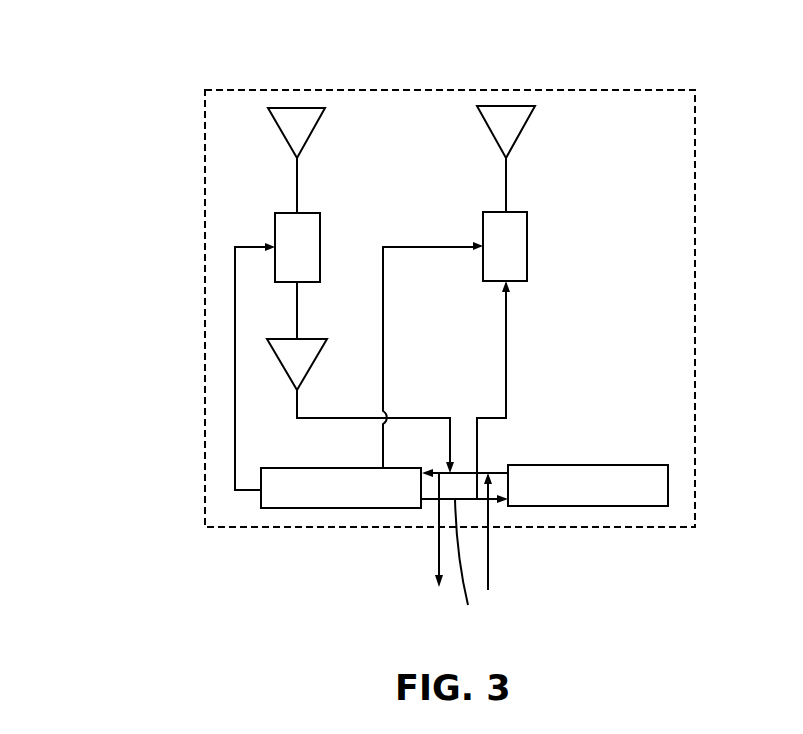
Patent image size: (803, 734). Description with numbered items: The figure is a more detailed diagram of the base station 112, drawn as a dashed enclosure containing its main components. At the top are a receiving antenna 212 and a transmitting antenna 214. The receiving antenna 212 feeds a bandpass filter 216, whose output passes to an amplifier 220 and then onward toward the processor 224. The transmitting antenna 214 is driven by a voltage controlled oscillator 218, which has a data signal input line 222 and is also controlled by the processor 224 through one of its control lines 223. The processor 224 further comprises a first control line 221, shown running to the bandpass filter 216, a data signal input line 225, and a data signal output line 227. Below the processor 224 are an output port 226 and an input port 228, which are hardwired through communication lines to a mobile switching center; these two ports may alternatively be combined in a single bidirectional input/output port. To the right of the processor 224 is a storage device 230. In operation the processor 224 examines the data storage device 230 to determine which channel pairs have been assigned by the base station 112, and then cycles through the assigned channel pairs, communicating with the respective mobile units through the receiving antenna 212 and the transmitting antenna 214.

The base station 112 is at (127, 68).
The receiving antenna 212 is at (273, 122).
The transmitting antenna 214 is at (485, 123).
The bandpass filter 216 is at (275, 233).
The voltage controlled oscillator 218 is at (483, 233).
The amplifier 220 is at (312, 338).
The control line 221 is at (235, 337).
The data signal input line 222 is at (506, 322).
The control line 223 is at (398, 246).
The processor 224 is at (283, 468).
The data signal input line 225 is at (490, 473).
The output port 226 is at (439, 557).
The data signal output line 227 is at (459, 566).
The input port 228 is at (488, 563).
The storage device 230 is at (622, 465).